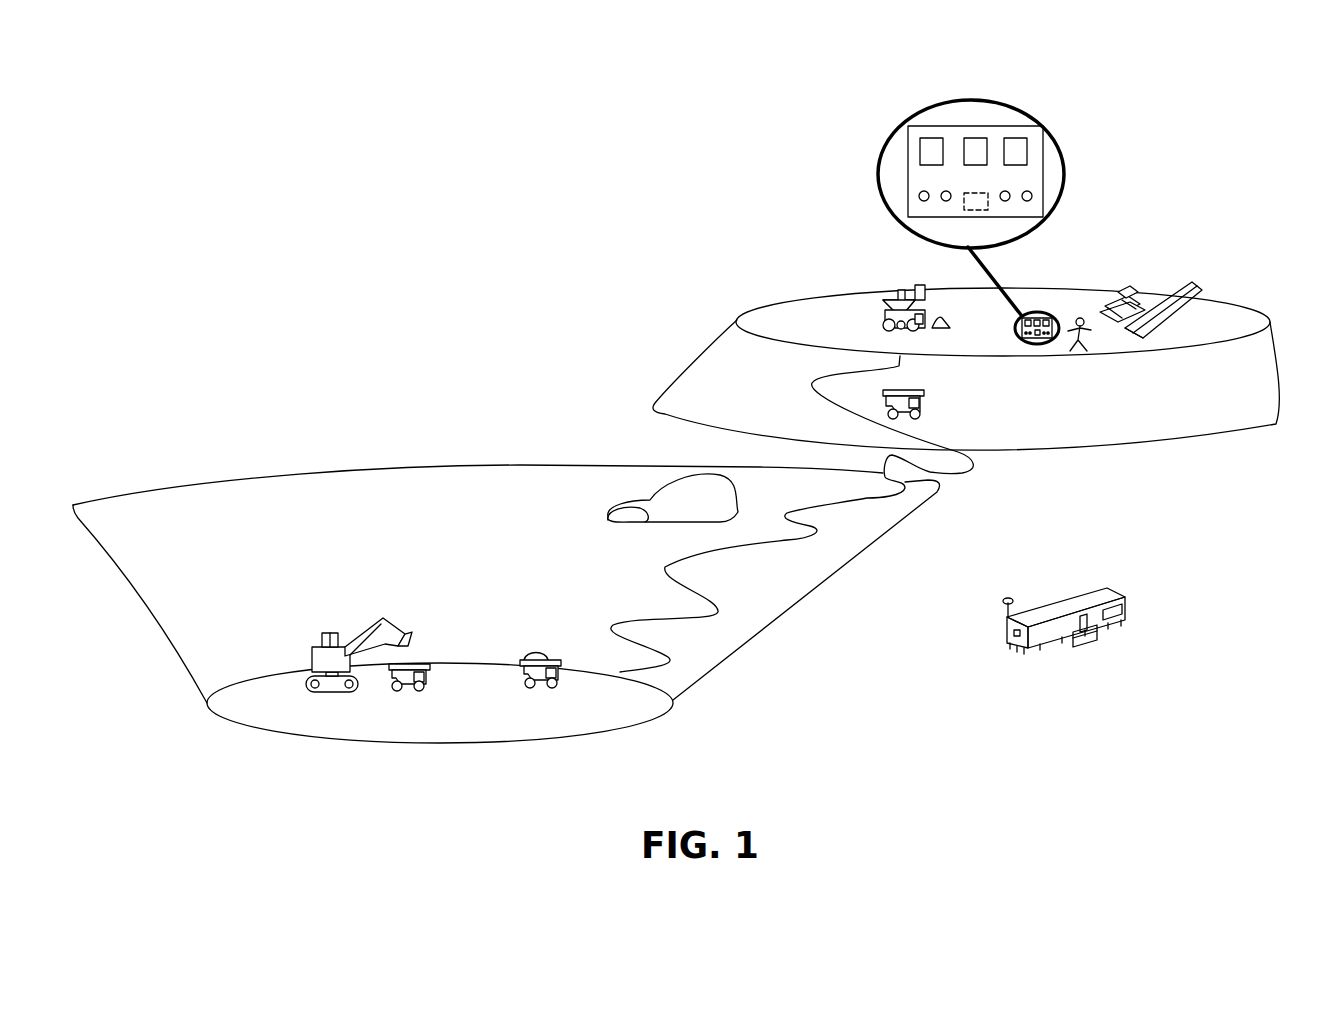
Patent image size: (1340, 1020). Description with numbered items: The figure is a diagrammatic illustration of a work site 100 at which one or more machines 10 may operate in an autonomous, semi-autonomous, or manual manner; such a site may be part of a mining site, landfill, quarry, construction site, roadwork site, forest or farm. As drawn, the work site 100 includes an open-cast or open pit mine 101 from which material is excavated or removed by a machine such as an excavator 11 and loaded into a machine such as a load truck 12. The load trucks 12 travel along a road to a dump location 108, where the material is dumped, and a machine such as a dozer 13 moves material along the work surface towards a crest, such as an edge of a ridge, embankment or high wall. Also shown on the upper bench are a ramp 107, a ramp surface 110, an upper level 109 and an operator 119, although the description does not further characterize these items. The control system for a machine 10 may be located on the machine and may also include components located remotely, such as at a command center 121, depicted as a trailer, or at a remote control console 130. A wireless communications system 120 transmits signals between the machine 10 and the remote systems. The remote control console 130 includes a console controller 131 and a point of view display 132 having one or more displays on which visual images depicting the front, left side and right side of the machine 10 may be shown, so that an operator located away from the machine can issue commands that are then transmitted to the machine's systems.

The work site 100 is at (701, 480).
The open pit mine 101 is at (378, 455).
The machine 10 is at (684, 465).
The excavator 11 is at (318, 657).
The load truck 12 is at (528, 665).
The dozer 13 is at (1110, 305).
The ramp 107 is at (1128, 345).
The dump location 108 is at (1174, 310).
The upper bench 109 is at (1228, 300).
The ramp surface 110 is at (1172, 306).
The operator 119 is at (983, 356).
The wireless communications system 120 is at (1132, 583).
The command center 121 is at (1073, 605).
The remote control console 130 is at (953, 205).
The console controller 131 is at (980, 207).
The point of view display 132 is at (935, 153).